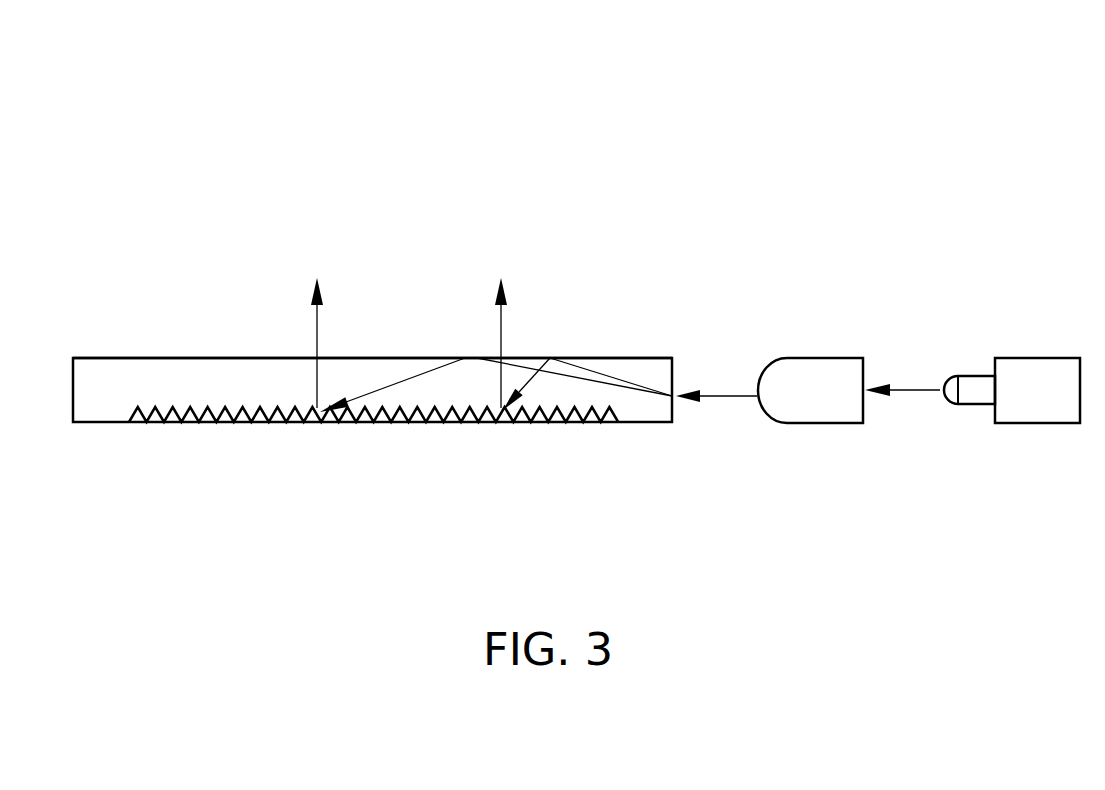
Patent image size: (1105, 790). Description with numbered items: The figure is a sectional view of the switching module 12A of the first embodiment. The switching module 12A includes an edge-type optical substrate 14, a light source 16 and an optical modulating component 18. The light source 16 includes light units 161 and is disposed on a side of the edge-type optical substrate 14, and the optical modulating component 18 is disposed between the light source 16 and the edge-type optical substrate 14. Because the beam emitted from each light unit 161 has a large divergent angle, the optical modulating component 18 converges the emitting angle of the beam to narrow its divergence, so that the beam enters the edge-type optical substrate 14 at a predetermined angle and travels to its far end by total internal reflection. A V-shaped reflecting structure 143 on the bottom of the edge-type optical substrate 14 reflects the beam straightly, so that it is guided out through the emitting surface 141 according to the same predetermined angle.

The switching module 12A is at (178, 131).
The edge-type optical substrate 14 is at (127, 368).
The emitting surface 141 is at (231, 357).
The V-shaped reflecting structure 143 is at (240, 423).
The light source 16 is at (1048, 368).
The light unit 161 is at (973, 380).
The optical modulating component 18 is at (817, 368).